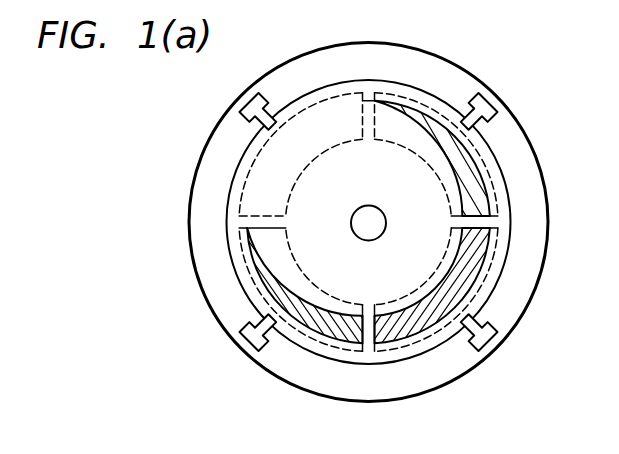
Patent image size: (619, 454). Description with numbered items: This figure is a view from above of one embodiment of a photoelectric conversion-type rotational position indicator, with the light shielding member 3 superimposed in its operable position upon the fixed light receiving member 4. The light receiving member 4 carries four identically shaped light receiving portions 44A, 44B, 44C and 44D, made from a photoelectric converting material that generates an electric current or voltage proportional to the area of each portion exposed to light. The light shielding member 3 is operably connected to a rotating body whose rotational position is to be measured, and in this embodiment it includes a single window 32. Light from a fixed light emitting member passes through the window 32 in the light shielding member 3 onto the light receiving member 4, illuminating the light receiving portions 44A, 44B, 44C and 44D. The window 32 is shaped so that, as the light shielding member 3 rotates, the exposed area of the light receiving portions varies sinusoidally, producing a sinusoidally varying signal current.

The light shielding member 3 is at (500, 243).
The light receiving member 4 is at (527, 265).
The window 32 is at (478, 200).
The light receiving portion 44A is at (471, 127).
The light receiving portion 44B is at (420, 337).
The light receiving portion 44C is at (333, 347).
The light receiving portion 44D is at (307, 127).